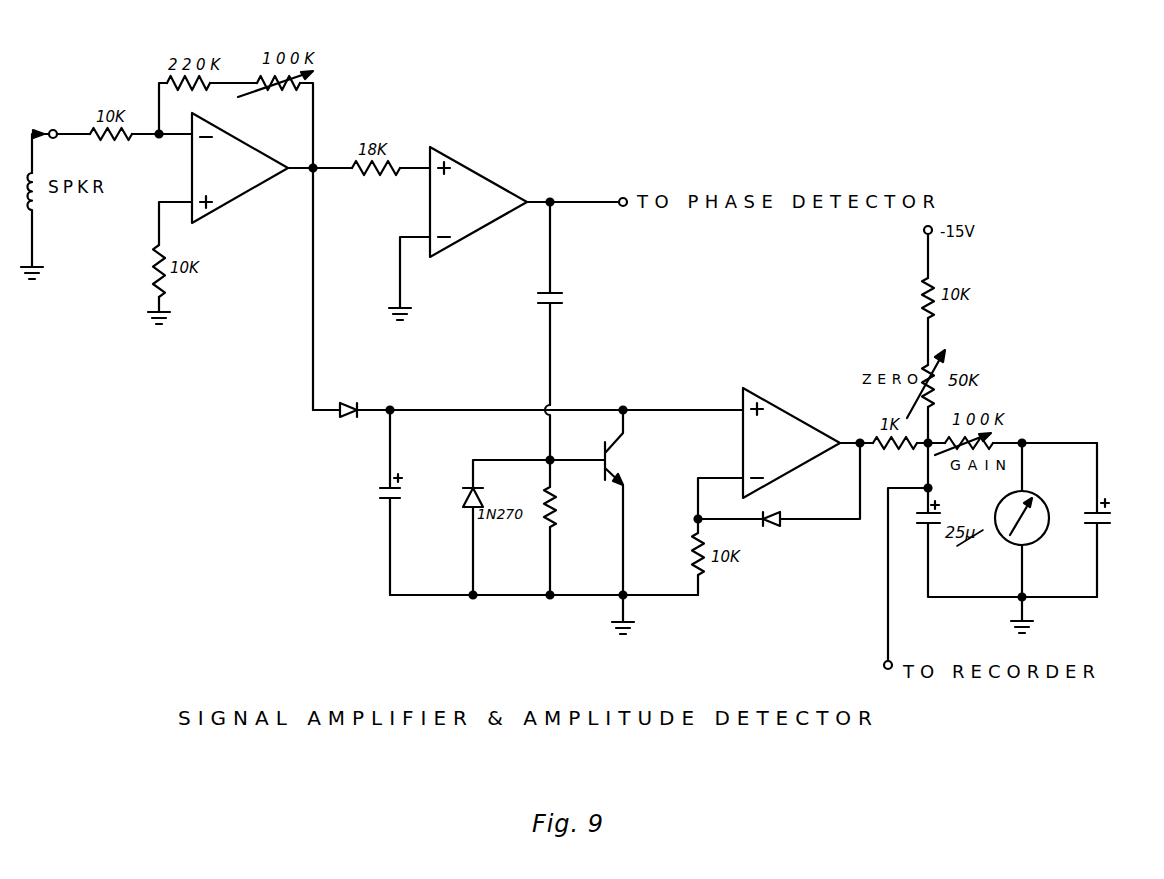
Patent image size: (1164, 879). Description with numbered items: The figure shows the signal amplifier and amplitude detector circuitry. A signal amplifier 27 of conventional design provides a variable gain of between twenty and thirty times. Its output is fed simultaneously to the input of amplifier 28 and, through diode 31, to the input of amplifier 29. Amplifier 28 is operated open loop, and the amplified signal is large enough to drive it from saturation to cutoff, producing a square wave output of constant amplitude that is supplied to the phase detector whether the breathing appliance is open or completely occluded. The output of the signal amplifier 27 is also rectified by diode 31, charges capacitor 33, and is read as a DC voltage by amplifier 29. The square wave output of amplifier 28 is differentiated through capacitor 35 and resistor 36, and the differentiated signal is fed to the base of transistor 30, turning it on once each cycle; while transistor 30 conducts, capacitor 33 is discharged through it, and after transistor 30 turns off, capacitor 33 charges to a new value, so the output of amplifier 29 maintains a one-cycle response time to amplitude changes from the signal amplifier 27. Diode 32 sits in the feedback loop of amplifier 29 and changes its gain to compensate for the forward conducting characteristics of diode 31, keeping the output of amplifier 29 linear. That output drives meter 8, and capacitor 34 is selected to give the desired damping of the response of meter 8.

The meter 8 is at (1038, 537).
The signal amplifier 27 is at (240, 168).
The amplifier 28 is at (478, 202).
The amplifier 29 is at (791, 443).
The transistor 30 is at (597, 502).
The diode 31 is at (355, 398).
The diode 32 is at (779, 499).
The capacitor 33 is at (375, 500).
The capacitor 34 is at (1111, 520).
The capacitor 35 is at (560, 312).
The resistor 36 is at (553, 520).